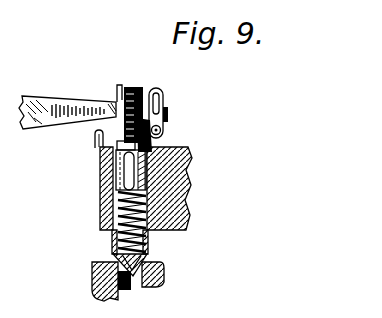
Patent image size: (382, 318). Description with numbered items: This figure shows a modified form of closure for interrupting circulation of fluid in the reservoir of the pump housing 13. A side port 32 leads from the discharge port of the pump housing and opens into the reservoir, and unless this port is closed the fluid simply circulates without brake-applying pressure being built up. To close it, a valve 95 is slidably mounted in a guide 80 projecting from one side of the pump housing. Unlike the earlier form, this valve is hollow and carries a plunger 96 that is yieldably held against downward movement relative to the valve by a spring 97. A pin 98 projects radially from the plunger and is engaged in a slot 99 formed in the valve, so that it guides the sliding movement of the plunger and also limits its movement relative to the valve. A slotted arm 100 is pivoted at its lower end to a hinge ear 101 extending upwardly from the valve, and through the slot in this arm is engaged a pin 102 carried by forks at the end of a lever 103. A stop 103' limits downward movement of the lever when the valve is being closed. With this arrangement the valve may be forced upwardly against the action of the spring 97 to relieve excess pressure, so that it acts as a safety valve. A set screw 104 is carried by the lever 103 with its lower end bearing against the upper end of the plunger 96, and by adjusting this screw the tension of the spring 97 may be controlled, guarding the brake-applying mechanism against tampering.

The pump housing 13 is at (92, 282).
The side port 32 is at (133, 280).
The guide 80 is at (103, 192).
The valve 95 is at (114, 238).
The plunger 96 is at (113, 143).
The spring 97 is at (150, 250).
The pin 98 is at (153, 176).
The slot 99 is at (183, 153).
The slotted arm 100 is at (163, 92).
The hinge ear 101 is at (161, 130).
The pin 102 is at (168, 111).
The lever 103 is at (67, 91).
The stop 103' is at (68, 143).
The set screw 104 is at (119, 88).